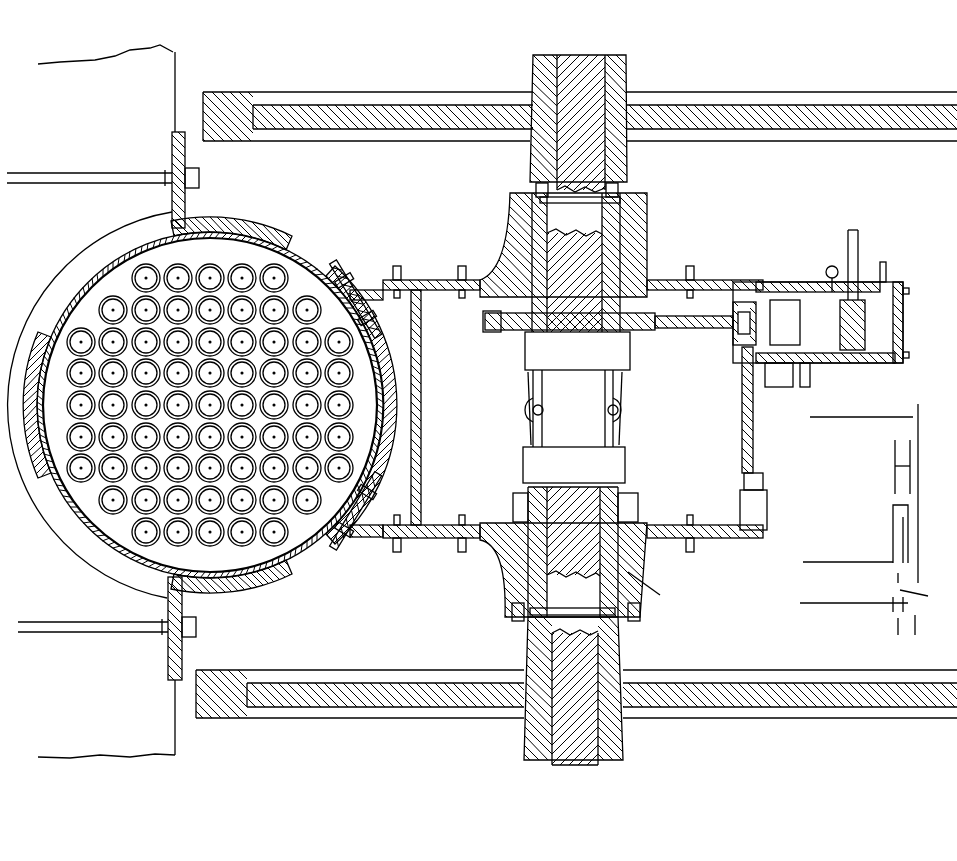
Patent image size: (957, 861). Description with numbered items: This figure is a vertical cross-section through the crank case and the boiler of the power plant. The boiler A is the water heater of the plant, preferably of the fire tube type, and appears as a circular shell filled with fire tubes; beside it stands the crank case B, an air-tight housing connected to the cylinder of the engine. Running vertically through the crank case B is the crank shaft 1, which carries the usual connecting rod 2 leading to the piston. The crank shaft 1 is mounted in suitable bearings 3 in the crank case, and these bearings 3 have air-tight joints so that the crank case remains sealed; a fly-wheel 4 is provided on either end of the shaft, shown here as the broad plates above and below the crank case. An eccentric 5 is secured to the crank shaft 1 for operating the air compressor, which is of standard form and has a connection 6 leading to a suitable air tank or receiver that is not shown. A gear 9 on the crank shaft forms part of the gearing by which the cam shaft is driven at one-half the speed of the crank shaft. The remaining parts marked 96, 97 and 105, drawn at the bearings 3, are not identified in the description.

The crank shaft 1 is at (568, 752).
The connecting rod 2 is at (540, 466).
The bearings 3 is at (540, 240).
The fly-wheels 4 is at (361, 115).
The eccentric 5 is at (515, 325).
The connection 6 is at (848, 240).
The gear 9 is at (516, 505).
The bearing 96 is at (650, 596).
The retaining ring 97 is at (585, 612).
The retaining ring 105 is at (615, 188).
The water heater or boiler A is at (302, 530).
The crank case B is at (712, 505).